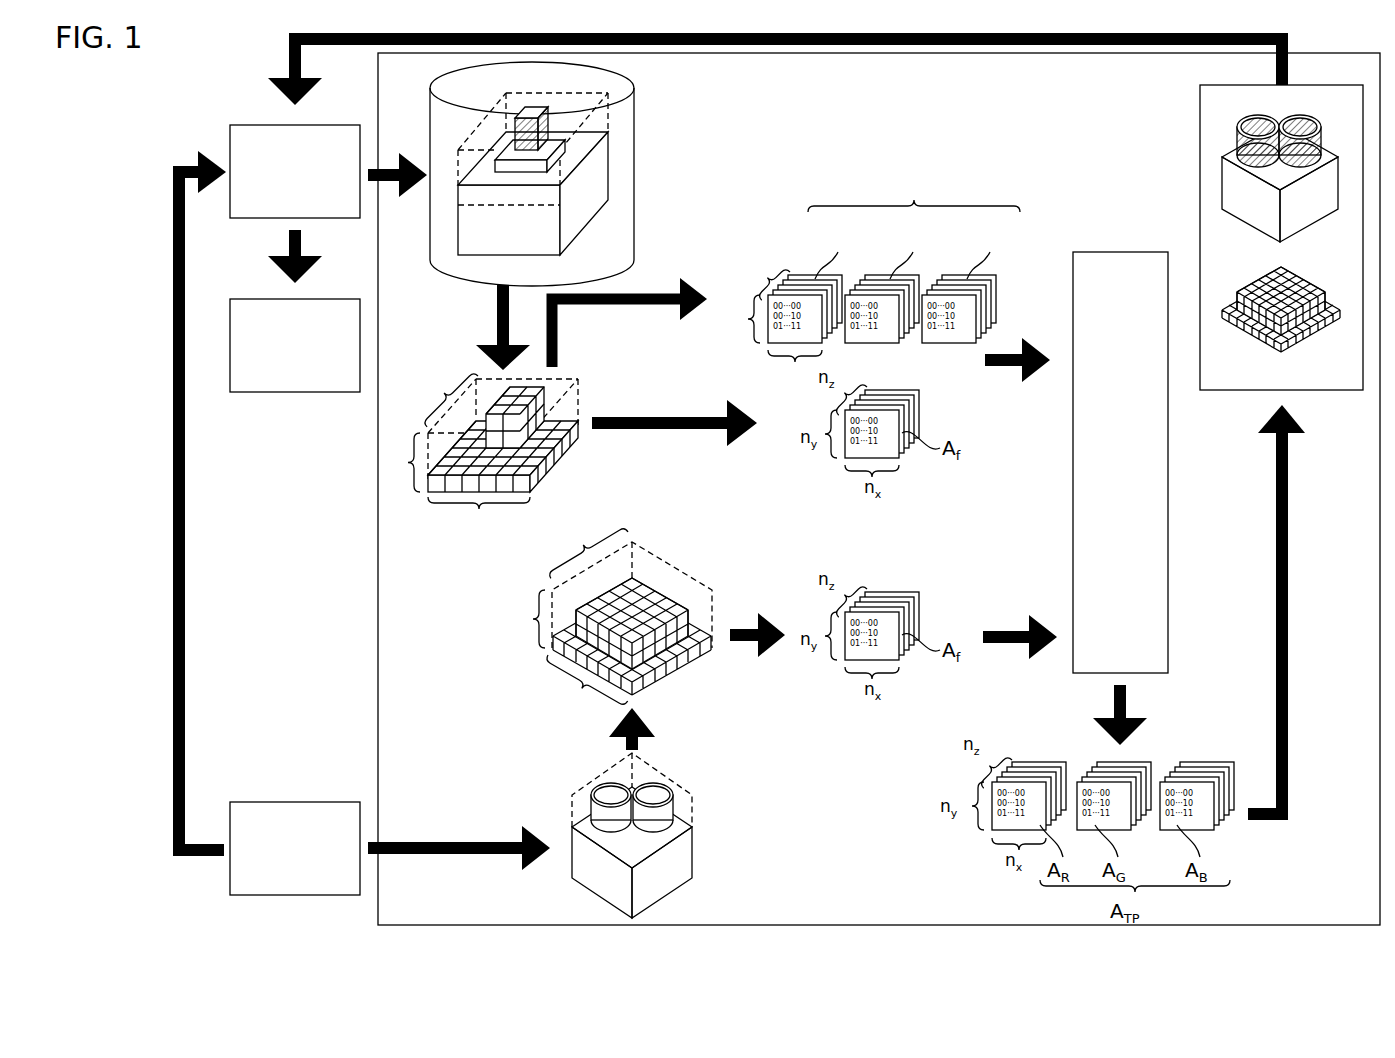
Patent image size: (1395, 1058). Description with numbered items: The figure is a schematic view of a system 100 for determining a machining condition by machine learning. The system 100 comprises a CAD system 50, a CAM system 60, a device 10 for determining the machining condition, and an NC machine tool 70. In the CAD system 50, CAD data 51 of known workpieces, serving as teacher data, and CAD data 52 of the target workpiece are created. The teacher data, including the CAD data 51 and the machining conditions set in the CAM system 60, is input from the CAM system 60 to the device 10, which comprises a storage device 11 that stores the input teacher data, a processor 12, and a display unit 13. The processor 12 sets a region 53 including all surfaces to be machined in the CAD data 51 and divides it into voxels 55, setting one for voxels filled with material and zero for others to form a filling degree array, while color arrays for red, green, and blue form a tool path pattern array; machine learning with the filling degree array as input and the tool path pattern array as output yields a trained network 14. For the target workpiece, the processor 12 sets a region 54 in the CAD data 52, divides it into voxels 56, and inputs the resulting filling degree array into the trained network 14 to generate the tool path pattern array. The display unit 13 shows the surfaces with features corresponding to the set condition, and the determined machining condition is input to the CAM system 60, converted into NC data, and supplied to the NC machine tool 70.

The system 100 is at (224, 58).
The device 10 is at (378, 682).
The storage device 11 is at (637, 127).
The processor 12 is at (1046, 163).
The display unit 13 is at (1200, 173).
The trained network 14 is at (1168, 630).
The CAD system 50 is at (255, 802).
The CAD data 51 is at (600, 186).
The CAD data 52 is at (1243, 193).
The region 53 is at (584, 398).
The region 54 is at (698, 585).
The voxels 55 is at (452, 350).
The voxels 56 is at (687, 682).
The CAM system 60 is at (258, 125).
The machine tool 70 is at (253, 392).